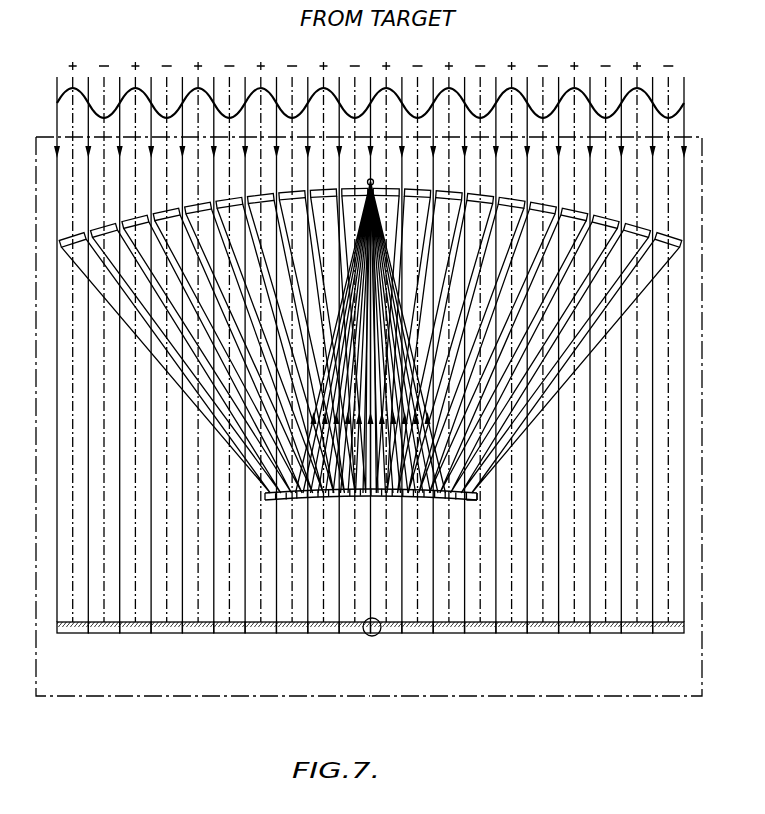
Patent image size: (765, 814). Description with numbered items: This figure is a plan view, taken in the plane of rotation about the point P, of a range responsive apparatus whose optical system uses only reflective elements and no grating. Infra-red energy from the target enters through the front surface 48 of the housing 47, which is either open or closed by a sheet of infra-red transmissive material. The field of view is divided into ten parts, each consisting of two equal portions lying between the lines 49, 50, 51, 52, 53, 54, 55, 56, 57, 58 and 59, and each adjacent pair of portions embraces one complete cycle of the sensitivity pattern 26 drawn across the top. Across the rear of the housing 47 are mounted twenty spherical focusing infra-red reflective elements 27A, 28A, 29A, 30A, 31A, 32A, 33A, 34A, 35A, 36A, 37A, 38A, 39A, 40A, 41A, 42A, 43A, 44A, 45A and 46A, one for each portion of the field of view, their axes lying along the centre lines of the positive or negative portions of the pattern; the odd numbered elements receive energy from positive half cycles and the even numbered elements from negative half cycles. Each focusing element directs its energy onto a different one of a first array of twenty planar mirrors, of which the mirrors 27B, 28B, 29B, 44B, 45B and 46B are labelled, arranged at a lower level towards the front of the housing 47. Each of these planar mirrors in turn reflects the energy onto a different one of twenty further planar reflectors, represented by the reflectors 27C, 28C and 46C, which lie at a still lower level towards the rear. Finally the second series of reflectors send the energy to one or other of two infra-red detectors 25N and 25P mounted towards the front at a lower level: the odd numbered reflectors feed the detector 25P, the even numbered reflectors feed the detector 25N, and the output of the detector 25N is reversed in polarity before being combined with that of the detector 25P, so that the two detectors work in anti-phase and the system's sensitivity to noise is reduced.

The sensitivity pattern 26 is at (57, 103).
The housing 47 is at (36, 696).
The front surface 48 is at (702, 137).
The line 49 is at (57, 77).
The line 50 is at (120, 77).
The line 51 is at (182, 77).
The line 52 is at (245, 77).
The line 53 is at (308, 77).
The line 54 is at (370, 77).
The line 55 is at (433, 77).
The line 56 is at (496, 77).
The line 57 is at (559, 77).
The line 58 is at (621, 77).
The line 59 is at (684, 77).
The infra-red detector 25P is at (367, 182).
The infra-red detector 25N is at (374, 182).
The planar mirror 27B is at (72, 228).
The planar mirror 28B is at (100, 226).
The planar mirror 29B is at (128, 219).
The planar mirror 44B is at (612, 208).
The planar mirror 45B is at (638, 226).
The planar mirror 46B is at (666, 236).
The planar reflector 27C is at (270, 501).
The planar reflector 28C is at (428, 531).
The planar reflector 46C is at (473, 501).
The spherical focusing infra-red reflective element 27A is at (68, 634).
The spherical focusing infra-red reflective element 28A is at (107, 634).
The spherical focusing infra-red reflective element 29A is at (138, 634).
The spherical focusing infra-red reflective element 30A is at (170, 634).
The spherical focusing infra-red reflective element 31A is at (200, 634).
The spherical focusing infra-red reflective element 32A is at (233, 634).
The spherical focusing infra-red reflective element 33A is at (262, 634).
The spherical focusing infra-red reflective element 34A is at (293, 634).
The spherical focusing infra-red reflective element 35A is at (324, 634).
The spherical focusing infra-red reflective element 36A is at (355, 634).
The spherical focusing infra-red reflective element 37A is at (388, 634).
The spherical focusing infra-red reflective element 38A is at (419, 634).
The spherical focusing infra-red reflective element 39A is at (450, 634).
The spherical focusing infra-red reflective element 40A is at (481, 634).
The spherical focusing infra-red reflective element 41A is at (512, 634).
The spherical focusing infra-red reflective element 42A is at (543, 634).
The spherical focusing infra-red reflective element 43A is at (574, 634).
The spherical focusing infra-red reflective element 44A is at (605, 634).
The spherical focusing infra-red reflective element 45A is at (636, 634).
The spherical focusing infra-red reflective element 46A is at (667, 634).
The point of rotation P is at (371, 640).